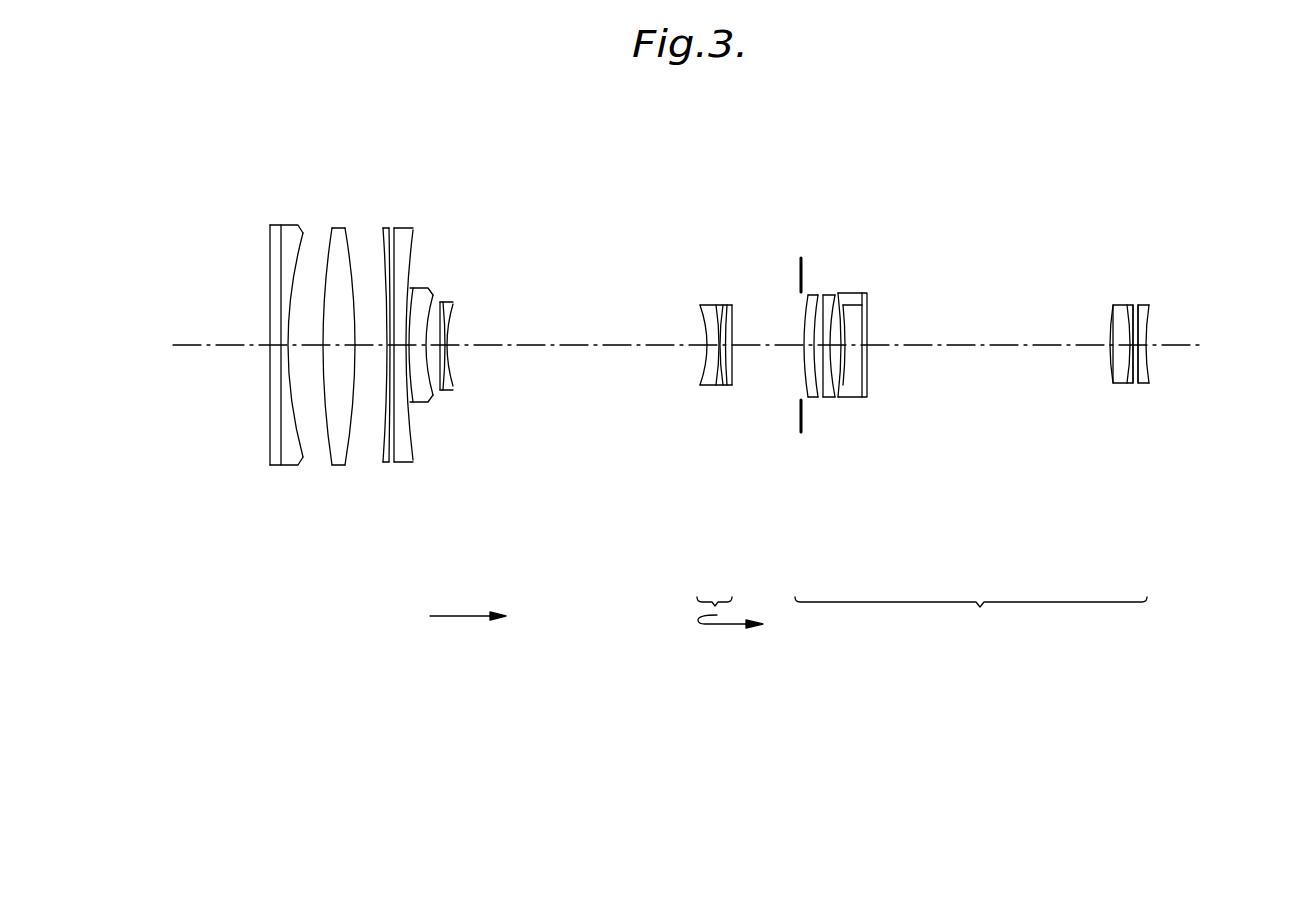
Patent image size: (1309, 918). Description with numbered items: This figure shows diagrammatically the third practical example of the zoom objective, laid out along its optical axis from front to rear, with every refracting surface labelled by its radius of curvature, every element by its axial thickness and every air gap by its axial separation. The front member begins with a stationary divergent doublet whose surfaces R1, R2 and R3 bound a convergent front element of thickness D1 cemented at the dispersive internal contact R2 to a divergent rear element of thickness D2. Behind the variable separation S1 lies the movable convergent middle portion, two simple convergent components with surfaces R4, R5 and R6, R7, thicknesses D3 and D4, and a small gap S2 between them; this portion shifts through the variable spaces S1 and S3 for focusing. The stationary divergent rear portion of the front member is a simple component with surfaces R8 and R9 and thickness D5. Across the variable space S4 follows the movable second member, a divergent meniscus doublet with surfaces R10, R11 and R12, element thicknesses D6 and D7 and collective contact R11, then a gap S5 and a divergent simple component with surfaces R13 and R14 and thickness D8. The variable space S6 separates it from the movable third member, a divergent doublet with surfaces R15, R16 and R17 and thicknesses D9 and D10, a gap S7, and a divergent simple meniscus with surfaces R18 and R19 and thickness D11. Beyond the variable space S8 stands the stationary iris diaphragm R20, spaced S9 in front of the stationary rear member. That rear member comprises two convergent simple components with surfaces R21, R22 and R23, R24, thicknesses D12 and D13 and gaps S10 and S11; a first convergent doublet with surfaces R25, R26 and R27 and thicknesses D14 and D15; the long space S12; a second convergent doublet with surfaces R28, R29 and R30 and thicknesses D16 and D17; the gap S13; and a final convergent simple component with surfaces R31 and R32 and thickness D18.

The front surface of front element of front doublet R1 is at (270, 328).
The dispersive internal contact surface of front doublet R2 is at (280, 290).
The rear surface of front doublet R3 is at (297, 263).
The front surface of front component of middle portion R4 is at (331, 228).
The rear surface of front component of middle portion R5 is at (344, 227).
The front surface of rear component of middle portion R6 is at (382, 230).
The rear surface of rear component of middle portion R7 is at (390, 226).
The front surface of rear portion of front member R8 is at (415, 230).
The rear surface of rear portion of front member R9 is at (411, 286).
The front surface of second-member doublet R10 is at (428, 287).
The collective internal contact of second-member doublet R11 is at (433, 292).
The rear surface of second-member doublet R12 is at (453, 305).
The front surface of second-member simple component R13 is at (452, 340).
The rear surface of second-member simple component R14 is at (451, 346).
The front surface of third-member doublet R15 is at (702, 328).
The collective internal contact of third-member doublet R16 is at (705, 305).
The rear surface of third-member doublet R17 is at (712, 305).
The front surface of third-member simple meniscus component R18 is at (722, 305).
The rear surface of third-member simple meniscus component R19 is at (740, 310).
The iris diaphragm stop R20 is at (803, 292).
The front surface of rear member R21 is at (808, 295).
The rear surface of first rear-member component R22 is at (818, 295).
The front surface of second rear-member component R23 is at (824, 295).
The rear surface of second rear-member component R24 is at (835, 300).
The front surface of first rear-member doublet R25 is at (838, 305).
The internal contact of first rear-member doublet R26 is at (845, 310).
The rear surface of first rear-member doublet R27 is at (862, 340).
The front surface of second rear-member doublet R28 is at (1108, 307).
The internal contact of second rear-member doublet R29 is at (1122, 307).
The rear surface of second rear-member doublet R30 is at (1133, 305).
The front surface of final simple component R31 is at (1145, 305).
The rear surface of final simple component R32 is at (1152, 330).
The axial thickness of front element of front doublet D1 is at (282, 352).
The axial thickness of rear element of front doublet D2 is at (292, 358).
The axial thickness of front middle-portion component D3 is at (335, 370).
The axial thickness of rear middle-portion component D4 is at (385, 352).
The axial thickness of rear portion of front member D5 is at (404, 400).
The axial thickness of divergent element of second-member doublet D6 is at (418, 397).
The axial thickness of collective element of second-member doublet D7 is at (427, 397).
The axial thickness of second-member simple component D8 is at (452, 355).
The axial thickness of convergent element of third-member doublet D9 is at (702, 383).
The axial thickness of divergent element of third-member doublet D10 is at (709, 388).
The axial thickness of third-member simple meniscus component D11 is at (736, 385).
The axial thickness of first rear-member component D12 is at (806, 300).
The axial thickness of second rear-member component D13 is at (836, 397).
The axial thickness of front element of first rear-member doublet D14 is at (850, 360).
The axial thickness of rear element of first rear-member doublet D15 is at (866, 345).
The axial thickness of front element of second rear-member doublet D16 is at (1114, 385).
The axial thickness of rear element of second rear-member doublet D17 is at (1133, 385).
The axial thickness of final simple component D18 is at (1148, 358).
The variable air separation behind front doublet S1 is at (305, 347).
The air separation between middle-portion components S2 is at (365, 355).
The variable air separation behind middle portion S3 is at (392, 365).
The variable air separation between front and second members S4 is at (418, 400).
The air separation within second member S5 is at (440, 370).
The variable air separation between second and third members S6 is at (613, 347).
The air separation within third member S7 is at (720, 386).
The variable air separation between third member and stop S8 is at (779, 350).
The air separation between stop and rear member S9 is at (803, 338).
The air separation between first two rear-member components S10 is at (819, 397).
The air separation before first rear-member doublet S11 is at (845, 397).
The air separation between rear-member doublets S12 is at (1056, 346).
The air separation before final simple component S13 is at (1148, 380).